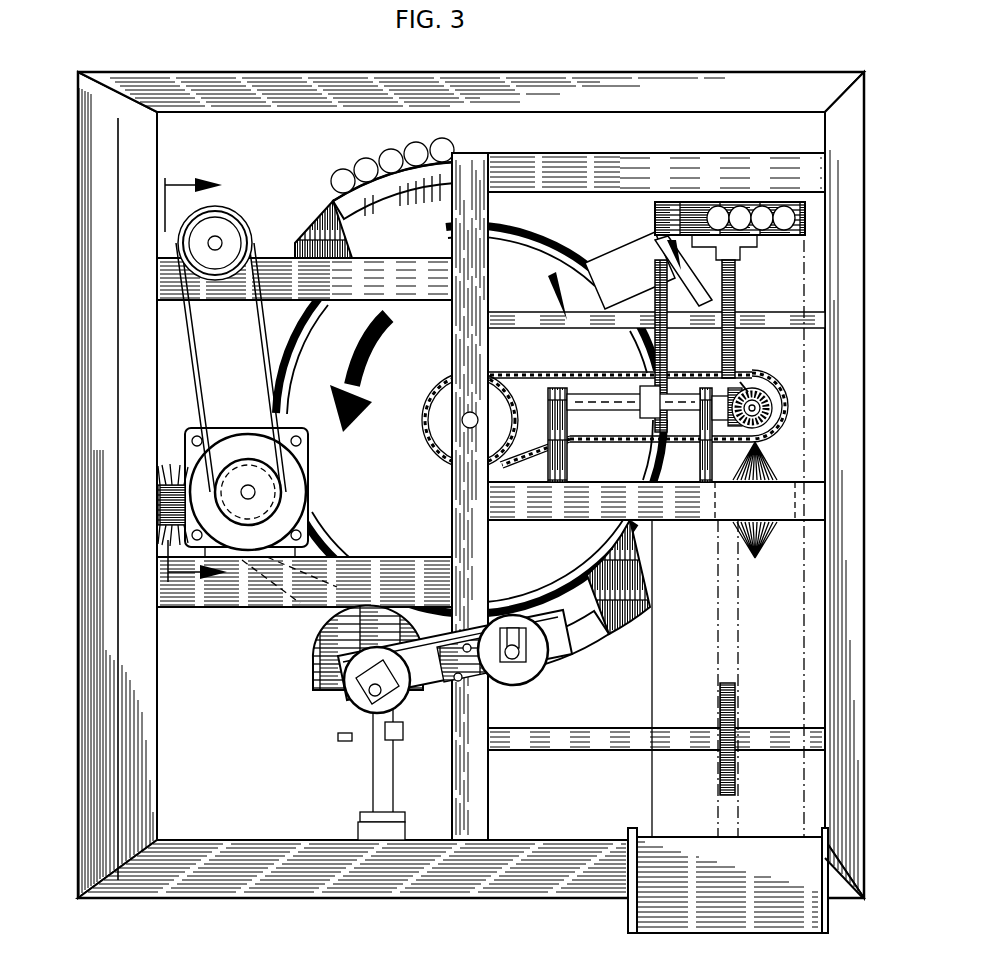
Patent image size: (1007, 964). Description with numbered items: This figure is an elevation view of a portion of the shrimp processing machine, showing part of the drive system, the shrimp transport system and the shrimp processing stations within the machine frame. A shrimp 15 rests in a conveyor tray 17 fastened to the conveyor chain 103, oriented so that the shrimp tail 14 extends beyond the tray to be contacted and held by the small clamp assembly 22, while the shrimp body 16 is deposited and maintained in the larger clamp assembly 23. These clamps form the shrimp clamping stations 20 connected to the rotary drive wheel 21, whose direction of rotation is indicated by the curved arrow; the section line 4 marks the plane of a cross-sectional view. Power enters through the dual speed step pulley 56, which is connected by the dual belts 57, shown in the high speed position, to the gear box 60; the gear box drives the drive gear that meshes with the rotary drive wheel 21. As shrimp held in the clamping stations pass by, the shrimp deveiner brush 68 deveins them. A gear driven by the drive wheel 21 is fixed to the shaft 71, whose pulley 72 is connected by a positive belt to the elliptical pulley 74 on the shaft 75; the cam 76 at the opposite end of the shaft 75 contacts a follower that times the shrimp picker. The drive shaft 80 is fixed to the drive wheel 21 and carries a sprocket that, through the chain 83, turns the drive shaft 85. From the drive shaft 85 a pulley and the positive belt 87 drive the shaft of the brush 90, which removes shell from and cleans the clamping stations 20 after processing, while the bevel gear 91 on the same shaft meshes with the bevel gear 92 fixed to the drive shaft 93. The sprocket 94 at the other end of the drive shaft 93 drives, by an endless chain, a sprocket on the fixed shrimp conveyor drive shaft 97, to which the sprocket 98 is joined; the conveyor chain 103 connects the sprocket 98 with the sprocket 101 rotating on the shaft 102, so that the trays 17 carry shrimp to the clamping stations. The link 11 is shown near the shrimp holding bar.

The section line 4- 4 is at (195, 375).
The sausage link 11 is at (609, 280).
The shrimp tail 14 is at (645, 237).
The shrimp 15 is at (352, 170).
The shrimp body 16 is at (350, 188).
The conveyor tray 17 is at (806, 221).
The shrimp clamping station 20 is at (393, 255).
The rotary drive wheel 21 is at (343, 476).
The small clamp assembly 22 is at (310, 238).
The larger clamp assembly 23 is at (428, 195).
The dual speed step pulley 56 is at (220, 228).
The dual belts 57 is at (198, 312).
The gear box 60 is at (237, 432).
The shrimp deveiner brush 68 is at (150, 545).
The shaft 71 is at (545, 665).
The pulley 72 is at (512, 672).
The elliptical pulley 74 is at (335, 675).
The shaft 75 is at (337, 737).
The cam 76 is at (318, 662).
The drive shaft 80 is at (462, 420).
The chain 83 is at (528, 345).
The drive shaft 85 is at (790, 408).
The positive belt 87 is at (790, 450).
The brush 90 is at (757, 555).
The bevel gear 91 is at (786, 392).
The bevel gear 92 is at (742, 382).
The drive shaft 93 is at (577, 440).
The sprocket 94 is at (652, 365).
The shrimp conveyor drive shaft 97 is at (773, 322).
The sprocket 98 is at (737, 268).
The sprocket 101 is at (736, 690).
The shaft 102 is at (775, 732).
The conveyor chain 103 is at (806, 262).